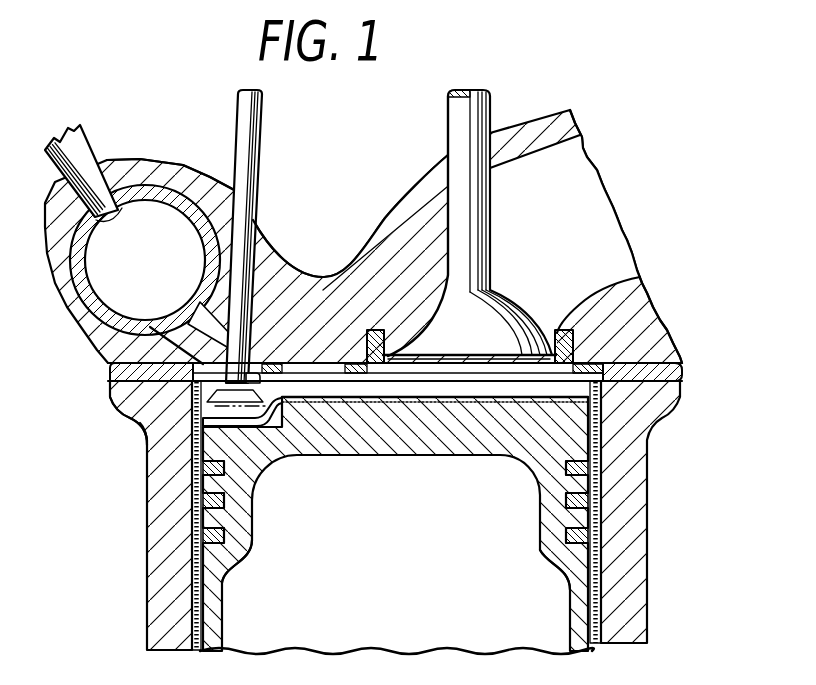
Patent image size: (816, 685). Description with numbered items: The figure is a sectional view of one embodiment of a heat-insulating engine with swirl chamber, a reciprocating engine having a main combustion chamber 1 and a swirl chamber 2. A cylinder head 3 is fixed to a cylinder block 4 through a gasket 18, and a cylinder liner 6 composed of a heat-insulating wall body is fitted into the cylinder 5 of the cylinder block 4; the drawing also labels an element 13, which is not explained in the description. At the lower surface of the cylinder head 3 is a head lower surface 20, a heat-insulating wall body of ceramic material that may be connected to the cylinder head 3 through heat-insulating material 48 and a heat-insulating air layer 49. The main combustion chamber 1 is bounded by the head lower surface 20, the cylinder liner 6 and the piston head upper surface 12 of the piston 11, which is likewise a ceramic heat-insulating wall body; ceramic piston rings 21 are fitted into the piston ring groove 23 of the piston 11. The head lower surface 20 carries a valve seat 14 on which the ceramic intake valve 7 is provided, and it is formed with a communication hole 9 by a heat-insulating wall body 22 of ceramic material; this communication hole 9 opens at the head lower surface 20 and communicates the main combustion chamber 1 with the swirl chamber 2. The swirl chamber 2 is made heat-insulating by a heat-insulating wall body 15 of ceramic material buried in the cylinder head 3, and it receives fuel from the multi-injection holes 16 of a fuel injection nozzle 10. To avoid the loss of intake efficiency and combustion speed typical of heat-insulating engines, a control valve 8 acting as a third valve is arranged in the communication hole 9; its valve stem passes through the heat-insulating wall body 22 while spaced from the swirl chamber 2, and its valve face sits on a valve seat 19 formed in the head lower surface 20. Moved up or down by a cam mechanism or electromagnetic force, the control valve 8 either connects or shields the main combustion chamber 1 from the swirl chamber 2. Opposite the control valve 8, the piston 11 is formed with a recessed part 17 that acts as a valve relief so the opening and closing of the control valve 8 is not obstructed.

The main combustion chamber 1 is at (458, 420).
The swirl chamber 2 is at (160, 220).
The cylinder head 3 is at (397, 227).
The cylinder block 4 is at (160, 528).
The cylinder 5 is at (192, 466).
The cylinder liner 6 is at (189, 570).
The intake valve 7 is at (505, 290).
The control valve 8 is at (248, 177).
The communication hole 9 is at (145, 435).
The fuel injection nozzle 10 is at (82, 147).
The piston 11 is at (514, 440).
The piston head upper surface 12 is at (405, 415).
The cylinder head 13 is at (583, 190).
The valve seat 14 is at (387, 330).
The heat-insulating wall body 15 is at (203, 207).
The multi-injection holes 16 is at (117, 212).
The recessed part 17 is at (240, 415).
The gasket 18 is at (110, 376).
The valve seat 19 is at (285, 430).
The head lower surface 20 is at (372, 430).
The piston rings 21 is at (225, 538).
The heat-insulating wall body 22 is at (130, 417).
The piston ring groove 23 is at (230, 567).
The heat-insulating material 48 is at (282, 355).
The heat-insulating air layer 49 is at (340, 353).